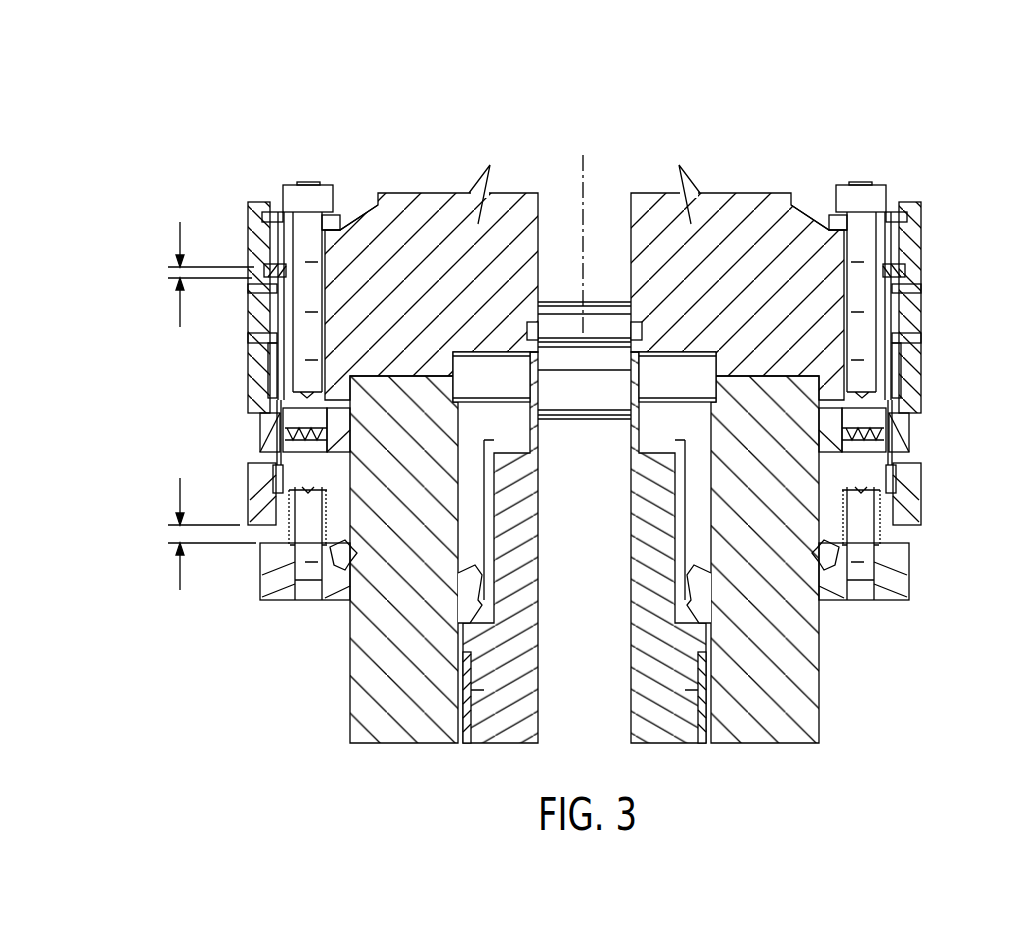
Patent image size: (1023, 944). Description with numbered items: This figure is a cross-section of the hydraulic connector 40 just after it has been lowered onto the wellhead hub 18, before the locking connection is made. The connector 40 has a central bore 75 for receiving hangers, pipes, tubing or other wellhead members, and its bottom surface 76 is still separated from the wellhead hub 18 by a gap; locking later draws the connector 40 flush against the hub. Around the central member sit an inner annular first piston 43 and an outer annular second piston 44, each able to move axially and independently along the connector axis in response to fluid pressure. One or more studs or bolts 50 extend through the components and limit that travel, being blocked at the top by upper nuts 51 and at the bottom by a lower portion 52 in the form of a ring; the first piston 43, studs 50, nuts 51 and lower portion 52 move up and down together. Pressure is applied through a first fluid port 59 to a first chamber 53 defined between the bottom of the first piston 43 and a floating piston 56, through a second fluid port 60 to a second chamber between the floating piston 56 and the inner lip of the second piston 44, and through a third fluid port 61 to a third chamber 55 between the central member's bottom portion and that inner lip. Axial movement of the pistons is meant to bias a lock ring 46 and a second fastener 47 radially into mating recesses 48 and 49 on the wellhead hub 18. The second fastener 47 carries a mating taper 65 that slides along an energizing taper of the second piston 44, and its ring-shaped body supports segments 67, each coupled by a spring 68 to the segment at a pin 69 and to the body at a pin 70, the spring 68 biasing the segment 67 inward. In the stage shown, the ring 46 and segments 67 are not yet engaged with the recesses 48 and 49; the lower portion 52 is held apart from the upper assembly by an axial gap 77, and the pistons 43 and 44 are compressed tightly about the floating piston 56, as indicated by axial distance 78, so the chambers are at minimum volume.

The wellhead hub 18 is at (857, 705).
The connector 40 is at (951, 126).
The first piston 43 is at (338, 230).
The second piston 44 is at (249, 242).
The lock ring 46 is at (337, 543).
The second fastener 47 is at (354, 432).
The recess 48 is at (358, 560).
The recess 49 is at (360, 450).
The stud or bolt 50 is at (318, 226).
The upper nut 51 is at (309, 183).
The lower portion 52 is at (277, 600).
The first chamber 53 is at (262, 222).
The third chamber 55 is at (268, 362).
The floating piston 56 is at (308, 264).
The first fluid port 59 is at (281, 214).
The second fluid port 60 is at (249, 289).
The third fluid port 61 is at (249, 338).
The mating taper 65 is at (259, 422).
The segment 67 is at (363, 437).
The spring 68 is at (308, 360).
The pin 69 is at (332, 408).
The pin 70 is at (270, 438).
The bore 75 is at (587, 174).
The bottom surface 76 is at (754, 383).
The axial gap 77 is at (178, 496).
The axial distance 78 is at (178, 238).